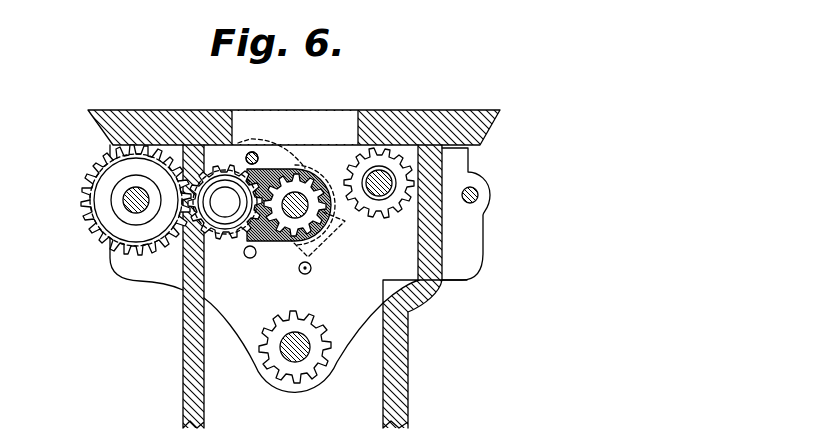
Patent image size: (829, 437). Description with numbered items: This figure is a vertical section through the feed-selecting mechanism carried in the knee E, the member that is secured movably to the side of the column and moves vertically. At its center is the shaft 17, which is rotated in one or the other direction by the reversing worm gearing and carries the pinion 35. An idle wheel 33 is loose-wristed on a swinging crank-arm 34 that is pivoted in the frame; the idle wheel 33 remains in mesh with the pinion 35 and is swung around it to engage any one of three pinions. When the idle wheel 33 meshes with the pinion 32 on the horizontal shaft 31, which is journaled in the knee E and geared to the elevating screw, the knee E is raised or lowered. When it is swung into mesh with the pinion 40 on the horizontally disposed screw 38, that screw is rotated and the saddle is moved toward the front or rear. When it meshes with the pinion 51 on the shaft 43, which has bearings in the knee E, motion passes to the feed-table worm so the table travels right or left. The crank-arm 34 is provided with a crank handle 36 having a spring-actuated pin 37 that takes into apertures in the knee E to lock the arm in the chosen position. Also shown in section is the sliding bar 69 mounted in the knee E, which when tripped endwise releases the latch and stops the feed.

The knee E is at (492, 134).
The shaft 17 is at (303, 196).
The horizontal shaft 31 is at (290, 357).
The pinion 32 is at (325, 353).
The idle wheel 33 is at (229, 231).
The swinging crank-arm 34 is at (262, 172).
The pinion 35 is at (313, 216).
The crank handle 36 is at (250, 152).
The spring-actuated pin 37 is at (256, 155).
The screw 38 is at (382, 192).
The pinion 40 is at (368, 208).
The shaft 43 is at (127, 208).
The pinion 51 is at (90, 178).
The sliding bar 69 is at (478, 190).